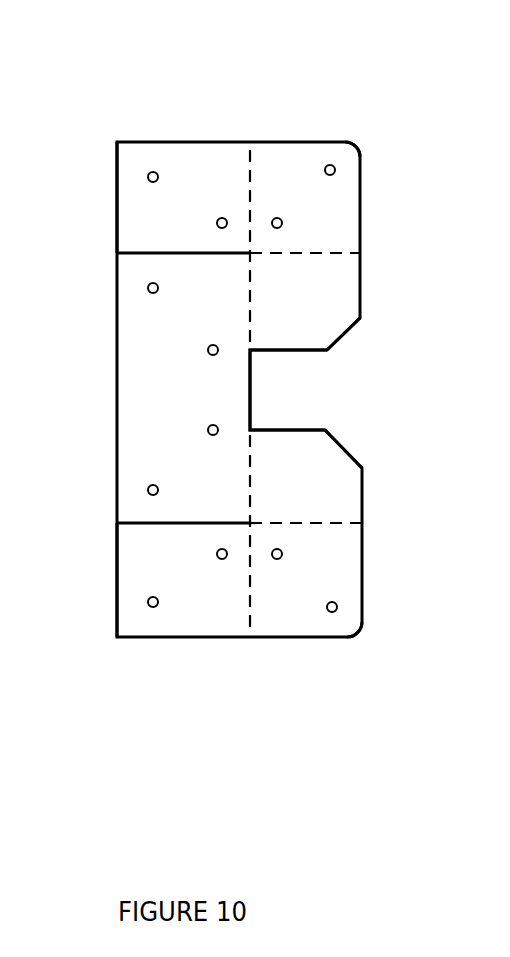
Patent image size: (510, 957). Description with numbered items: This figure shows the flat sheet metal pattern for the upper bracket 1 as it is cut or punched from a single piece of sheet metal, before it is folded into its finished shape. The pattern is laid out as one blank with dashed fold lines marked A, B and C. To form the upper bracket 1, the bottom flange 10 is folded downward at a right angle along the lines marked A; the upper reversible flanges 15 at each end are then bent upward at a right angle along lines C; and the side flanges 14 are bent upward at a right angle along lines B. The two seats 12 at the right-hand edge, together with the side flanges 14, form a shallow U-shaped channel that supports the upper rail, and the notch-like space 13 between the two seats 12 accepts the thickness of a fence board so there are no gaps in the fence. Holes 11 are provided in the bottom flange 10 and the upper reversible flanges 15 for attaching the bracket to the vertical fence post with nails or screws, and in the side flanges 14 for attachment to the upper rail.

The upper bracket 1 is at (392, 86).
The bottom flange 10 is at (110, 373).
The holes 11 is at (283, 200).
The seats 12 is at (367, 290).
The space 13 is at (255, 395).
The side flanges 14 is at (367, 160).
The upper reversible flanges 15 is at (110, 195).